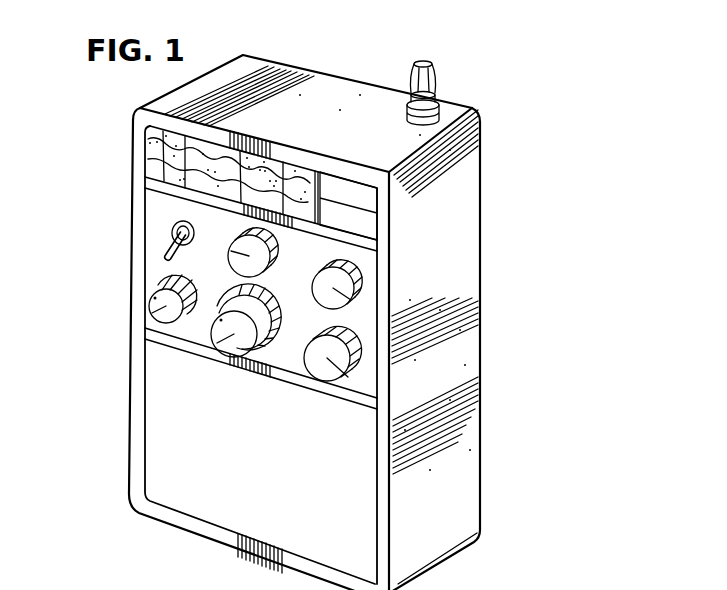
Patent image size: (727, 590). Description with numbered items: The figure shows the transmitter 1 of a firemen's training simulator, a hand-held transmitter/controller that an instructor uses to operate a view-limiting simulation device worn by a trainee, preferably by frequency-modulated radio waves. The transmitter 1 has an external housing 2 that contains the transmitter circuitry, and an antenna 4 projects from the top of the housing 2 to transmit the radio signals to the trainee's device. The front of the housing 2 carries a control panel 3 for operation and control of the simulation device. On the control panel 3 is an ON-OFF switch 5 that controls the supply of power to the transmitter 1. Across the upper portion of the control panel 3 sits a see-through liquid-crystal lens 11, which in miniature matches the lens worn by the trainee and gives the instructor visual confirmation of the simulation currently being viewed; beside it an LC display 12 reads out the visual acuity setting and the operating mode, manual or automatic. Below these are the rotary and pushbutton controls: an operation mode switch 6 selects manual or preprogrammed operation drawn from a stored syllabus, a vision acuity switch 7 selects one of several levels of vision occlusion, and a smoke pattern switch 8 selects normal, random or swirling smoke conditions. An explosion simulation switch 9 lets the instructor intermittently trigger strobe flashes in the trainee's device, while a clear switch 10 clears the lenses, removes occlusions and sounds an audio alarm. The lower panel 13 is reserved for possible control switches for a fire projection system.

The transmitter 1 is at (518, 328).
The external housing 2 is at (463, 438).
The control panel 3 is at (157, 218).
The antenna 4 is at (435, 82).
The ON-OFF switch 5 is at (168, 233).
The operation mode switch 6 is at (162, 311).
The vision acuity switch 7 is at (232, 335).
The smoke pattern switch 8 is at (230, 247).
The explosion simulation switch 9 is at (347, 296).
The clear switch 10 is at (342, 381).
The see-through liquid-crystal lens 11 is at (157, 149).
The LC display 12 is at (378, 222).
The lower panel 13 is at (260, 458).